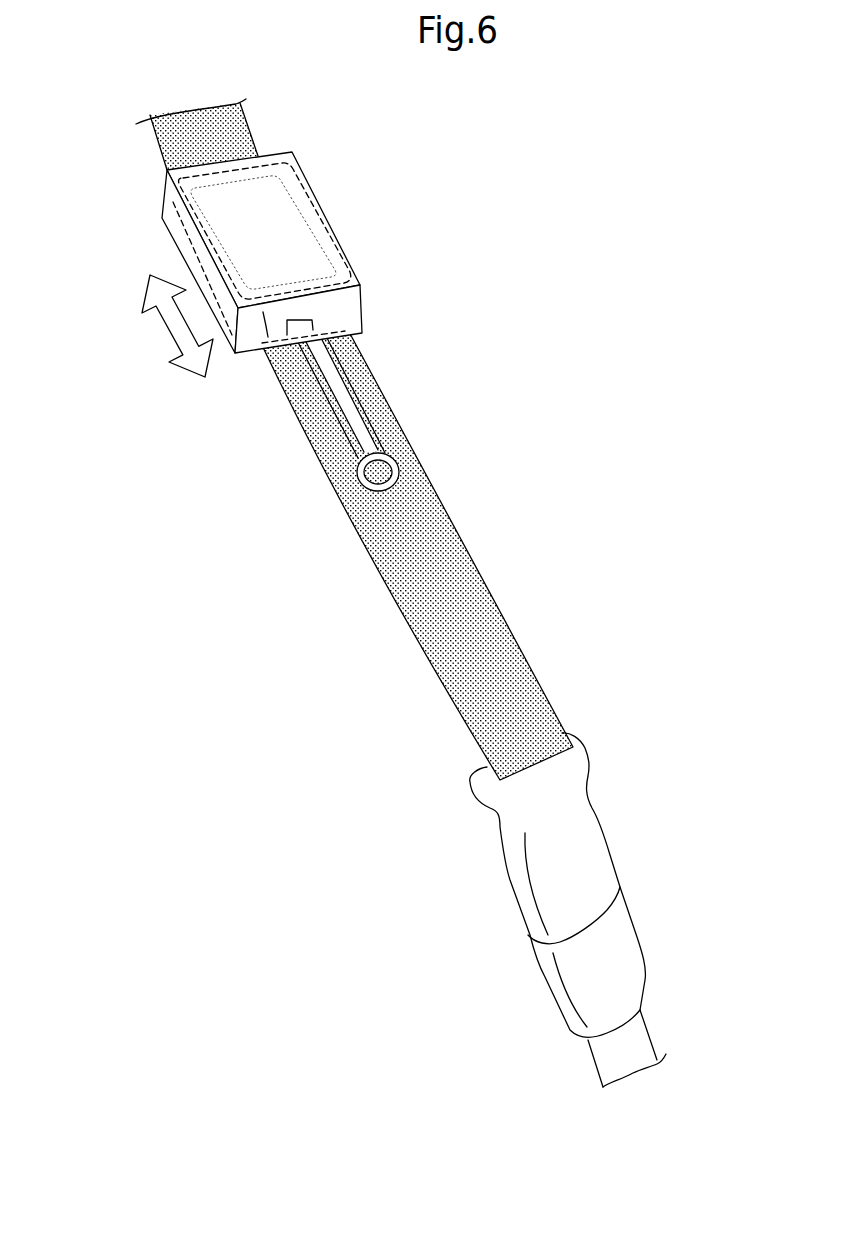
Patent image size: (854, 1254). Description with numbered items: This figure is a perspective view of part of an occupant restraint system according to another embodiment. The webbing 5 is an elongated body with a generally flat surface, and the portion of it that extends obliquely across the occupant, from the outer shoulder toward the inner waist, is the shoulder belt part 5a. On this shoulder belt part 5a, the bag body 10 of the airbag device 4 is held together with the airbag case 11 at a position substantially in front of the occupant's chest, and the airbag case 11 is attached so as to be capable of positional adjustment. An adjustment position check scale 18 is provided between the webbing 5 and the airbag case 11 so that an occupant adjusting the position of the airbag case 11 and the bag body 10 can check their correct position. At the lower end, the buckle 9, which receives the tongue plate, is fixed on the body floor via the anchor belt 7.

The airbag device 4 is at (244, 232).
The bag body 10 is at (308, 179).
The airbag case 11 is at (260, 357).
The adjustment position check scale 18 is at (327, 375).
The shoulder belt part 5a is at (429, 505).
The webbing 5 is at (354, 292).
The buckle 9 is at (591, 987).
The anchor belt 7 is at (640, 1042).